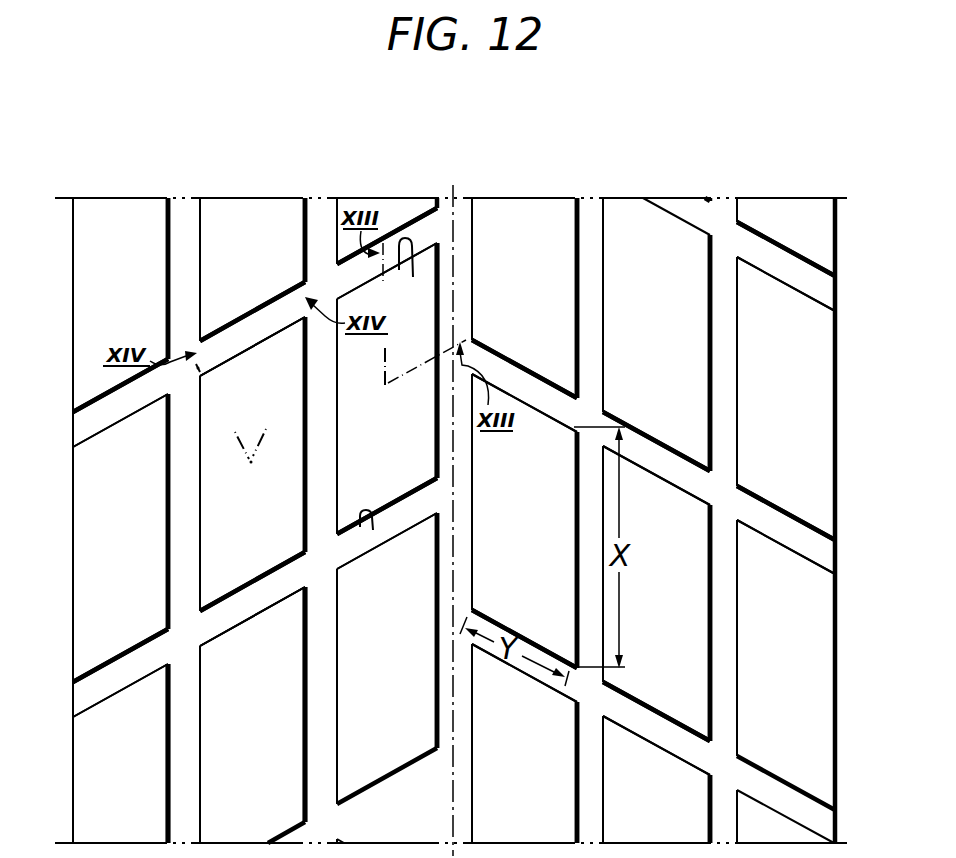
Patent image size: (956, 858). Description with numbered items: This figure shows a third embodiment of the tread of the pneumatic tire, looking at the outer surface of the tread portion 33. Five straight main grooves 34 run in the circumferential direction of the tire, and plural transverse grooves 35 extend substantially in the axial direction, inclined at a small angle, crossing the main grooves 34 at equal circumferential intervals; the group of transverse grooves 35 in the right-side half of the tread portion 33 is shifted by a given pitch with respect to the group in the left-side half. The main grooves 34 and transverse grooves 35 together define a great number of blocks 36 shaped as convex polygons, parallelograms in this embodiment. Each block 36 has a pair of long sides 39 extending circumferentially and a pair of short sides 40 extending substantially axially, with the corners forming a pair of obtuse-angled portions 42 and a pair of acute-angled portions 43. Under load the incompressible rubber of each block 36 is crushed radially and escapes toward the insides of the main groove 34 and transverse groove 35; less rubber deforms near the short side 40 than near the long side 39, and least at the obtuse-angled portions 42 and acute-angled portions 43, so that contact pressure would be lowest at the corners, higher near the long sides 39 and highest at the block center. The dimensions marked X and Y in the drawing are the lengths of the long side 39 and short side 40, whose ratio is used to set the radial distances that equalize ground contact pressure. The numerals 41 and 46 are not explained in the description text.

The tread portion 33 is at (526, 226).
The main grooves 34 is at (178, 214).
The transverse grooves 35 is at (96, 408).
The blocks 36 is at (210, 546).
The long sides 39 is at (337, 427).
The short sides 40 is at (365, 510).
The fine grooves 41 is at (252, 470).
The obtuse-angled portions 42 is at (212, 377).
The acute-angled portions 43 is at (272, 345).
The narrow grooves 46 is at (183, 777).